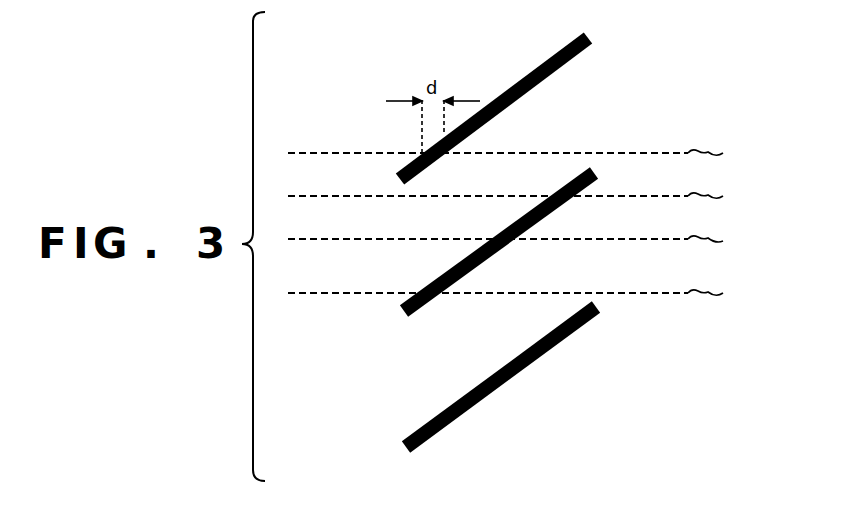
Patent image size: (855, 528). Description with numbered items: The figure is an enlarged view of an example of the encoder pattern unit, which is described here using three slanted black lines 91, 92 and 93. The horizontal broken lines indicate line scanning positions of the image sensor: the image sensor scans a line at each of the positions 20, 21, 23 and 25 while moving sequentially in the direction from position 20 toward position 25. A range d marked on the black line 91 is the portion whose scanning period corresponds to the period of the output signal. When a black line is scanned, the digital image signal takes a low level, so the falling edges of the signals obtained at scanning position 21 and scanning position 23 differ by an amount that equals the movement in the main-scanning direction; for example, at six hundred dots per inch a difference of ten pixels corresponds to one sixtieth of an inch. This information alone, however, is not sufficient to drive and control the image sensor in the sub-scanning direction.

The line scanning position 20 is at (523, 153).
The line scanning position 21 is at (523, 196).
The line scanning position 23 is at (523, 250).
The line scanning position 25 is at (523, 293).
The black line 91 is at (572, 56).
The black line 92 is at (572, 168).
The black line 93 is at (574, 328).